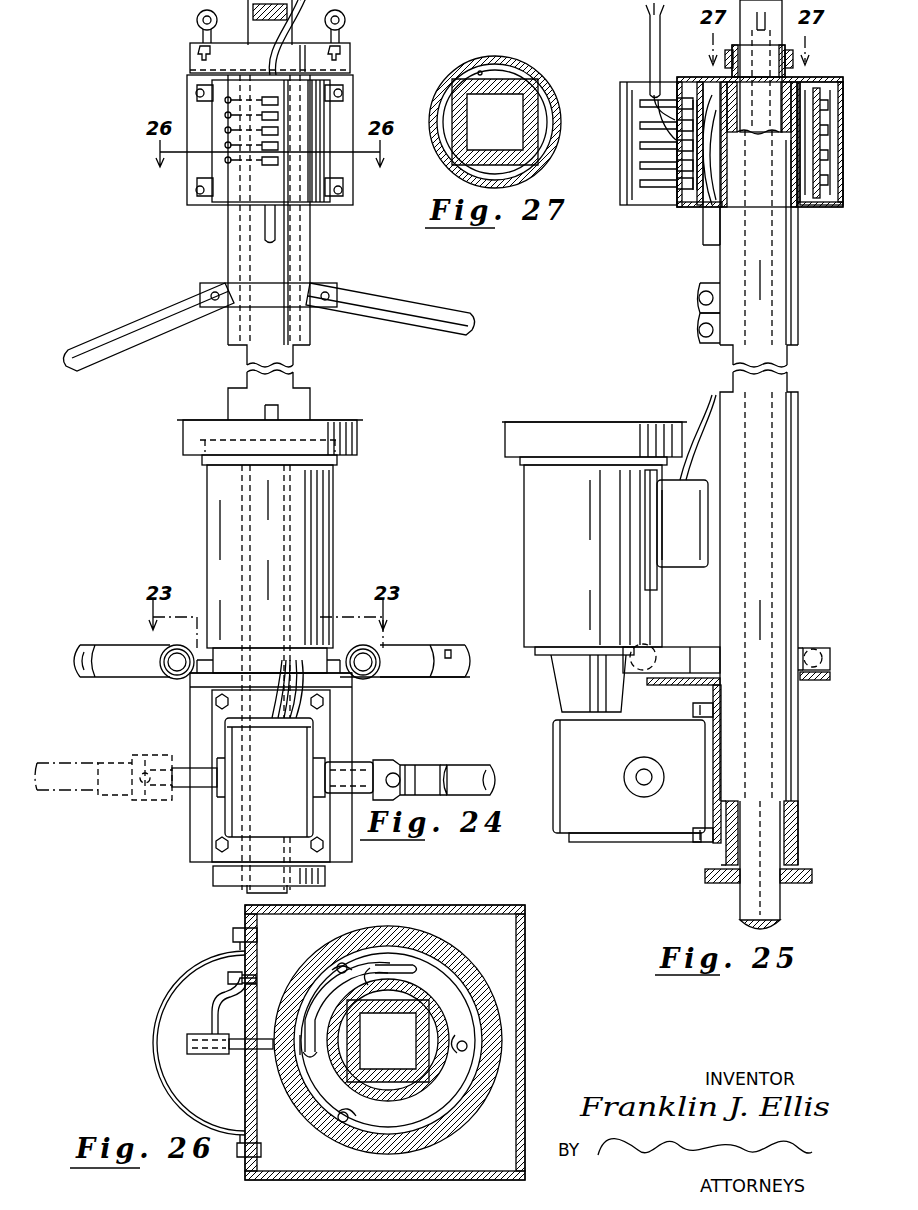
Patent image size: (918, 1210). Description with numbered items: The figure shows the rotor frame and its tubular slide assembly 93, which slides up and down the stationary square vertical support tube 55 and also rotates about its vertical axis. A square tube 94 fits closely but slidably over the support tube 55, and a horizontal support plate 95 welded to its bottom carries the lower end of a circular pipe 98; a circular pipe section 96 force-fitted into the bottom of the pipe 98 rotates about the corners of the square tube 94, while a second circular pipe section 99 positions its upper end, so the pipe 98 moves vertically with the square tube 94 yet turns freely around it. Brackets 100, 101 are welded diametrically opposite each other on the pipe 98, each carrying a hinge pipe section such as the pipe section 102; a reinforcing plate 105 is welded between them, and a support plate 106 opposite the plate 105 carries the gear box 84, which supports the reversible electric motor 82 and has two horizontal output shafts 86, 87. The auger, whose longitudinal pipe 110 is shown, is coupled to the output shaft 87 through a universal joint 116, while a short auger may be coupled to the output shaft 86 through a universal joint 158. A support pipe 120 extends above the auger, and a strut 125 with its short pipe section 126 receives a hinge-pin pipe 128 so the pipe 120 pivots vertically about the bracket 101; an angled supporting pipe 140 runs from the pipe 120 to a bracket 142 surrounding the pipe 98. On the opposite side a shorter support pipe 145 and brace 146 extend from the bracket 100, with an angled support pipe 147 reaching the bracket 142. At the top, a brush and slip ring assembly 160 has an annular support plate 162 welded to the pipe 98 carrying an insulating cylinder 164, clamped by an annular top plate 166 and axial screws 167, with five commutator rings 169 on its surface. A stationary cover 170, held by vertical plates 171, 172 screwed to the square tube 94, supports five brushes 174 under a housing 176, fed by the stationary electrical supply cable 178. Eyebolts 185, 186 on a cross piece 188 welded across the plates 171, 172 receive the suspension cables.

In FIG. 27, the square vertical support tube 55 is at (472, 142).
In FIG. 25, the square vertical support tube 55 is at (780, 918).
In FIG. 26, the square vertical support tube 55 is at (368, 1068).
In FIG. 24, the reversible electric motor 82 is at (207, 518).
In FIG. 25, the reversible electric motor 82 is at (524, 555).
In FIG. 24, the gear box 84 is at (235, 810).
In FIG. 25, the gear box 84 is at (560, 730).
In FIG. 24, the output shaft 86 is at (185, 795).
In FIG. 24, the output shaft 87 is at (350, 775).
In FIG. 25, the output shaft 87 is at (640, 780).
In FIG. 24, the tubular slide assembly 93 is at (199, 382).
In FIG. 25, the tubular slide assembly 93 is at (691, 368).
In FIG. 27, the square tube 94 is at (507, 85).
In FIG. 25, the square tube 94 is at (780, 820).
In FIG. 26, the square tube 94 is at (430, 1058).
In FIG. 24, the horizontal support plate 95 is at (215, 875).
In FIG. 25, the horizontal support plate 95 is at (708, 885).
In FIG. 25, the circular pipe section 96 is at (795, 855).
In FIG. 24, the circular pipe 98 is at (228, 265).
In FIG. 27, the circular pipe 98 is at (448, 165).
In FIG. 25, the circular pipe 98 is at (798, 330).
In FIG. 26, the circular pipe 98 is at (425, 1100).
In FIG. 27, the second circular pipe section 99 is at (478, 72).
In FIG. 24, the bracket 100 is at (205, 690).
In FIG. 24, the bracket 101 is at (325, 680).
In FIG. 25, the pipe section 102 is at (700, 620).
In FIG. 25, the reinforcing plate 105 is at (822, 680).
In FIG. 24, the support plate 106 is at (345, 718).
In FIG. 25, the support plate 106 is at (712, 735).
In FIG. 24, the longitudinal pipe 110 is at (482, 790).
In FIG. 24, the universal joint 116 is at (410, 765).
In FIG. 24, the support pipe 120 is at (405, 650).
In FIG. 24, the strut 125 is at (455, 655).
In FIG. 25, the short pipe section 126 is at (835, 650).
In FIG. 24, the pipe 128 is at (372, 675).
In FIG. 24, the angled supporting pipe 140 is at (410, 330).
In FIG. 24, the bracket 142 is at (275, 310).
In FIG. 25, the bracket 142 is at (700, 300).
In FIG. 24, the shorter support pipe 145 is at (160, 645).
In FIG. 25, the shorter support pipe 145 is at (650, 655).
In FIG. 24, the brace 146 is at (80, 650).
In FIG. 25, the brace 146 is at (813, 650).
In FIG. 24, the angled support pipe 147 is at (150, 315).
In FIG. 25, the angled support pipe 147 is at (700, 328).
In FIG. 24, the universal joint 158 is at (130, 760).
In FIG. 24, the brush and slip ring assembly 160 is at (203, 218).
In FIG. 25, the brush and slip ring assembly 160 is at (698, 231).
In FIG. 24, the annular support plate 162 is at (460, 765).
In FIG. 25, the annular support plate 162 is at (705, 225).
In FIG. 25, the insulating cylinder 164 is at (685, 200).
In FIG. 26, the insulating cylinder 164 is at (490, 990).
In FIG. 25, the annular top plate 166 is at (690, 78).
In FIG. 25, the screws 167 is at (800, 215).
In FIG. 26, the screws 167 is at (340, 965).
In FIG. 25, the commutator rings 169 is at (810, 207).
In FIG. 24, the stationary cover 170 is at (187, 100).
In FIG. 25, the stationary cover 170 is at (790, 82).
In FIG. 26, the stationary cover 170 is at (525, 925).
In FIG. 24, the vertical plate 171 is at (330, 60).
In FIG. 25, the vertical plate 171 is at (730, 55).
In FIG. 25, the vertical plate 172 is at (795, 55).
In FIG. 24, the brushes 174 is at (300, 195).
In FIG. 25, the brushes 174 is at (676, 160).
In FIG. 26, the brushes 174 is at (258, 1060).
In FIG. 24, the housing 176 is at (200, 172).
In FIG. 25, the housing 176 is at (625, 110).
In FIG. 26, the housing 176 is at (170, 1000).
In FIG. 25, the electrical supply cable 178 is at (650, 36).
In FIG. 26, the electrical supply cable 178 is at (380, 965).
In FIG. 24, the eyebolt 185 is at (197, 22).
In FIG. 24, the eyebolt 186 is at (345, 18).
In FIG. 24, the cross piece 188 is at (190, 58).